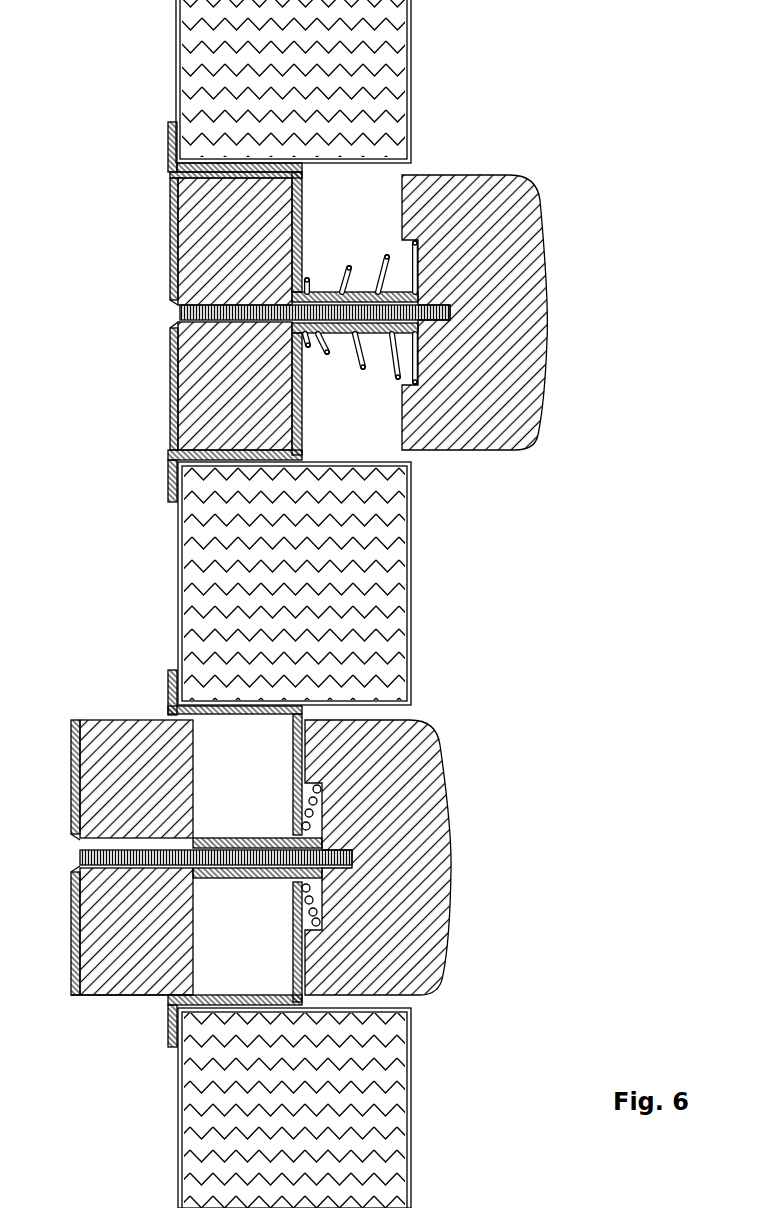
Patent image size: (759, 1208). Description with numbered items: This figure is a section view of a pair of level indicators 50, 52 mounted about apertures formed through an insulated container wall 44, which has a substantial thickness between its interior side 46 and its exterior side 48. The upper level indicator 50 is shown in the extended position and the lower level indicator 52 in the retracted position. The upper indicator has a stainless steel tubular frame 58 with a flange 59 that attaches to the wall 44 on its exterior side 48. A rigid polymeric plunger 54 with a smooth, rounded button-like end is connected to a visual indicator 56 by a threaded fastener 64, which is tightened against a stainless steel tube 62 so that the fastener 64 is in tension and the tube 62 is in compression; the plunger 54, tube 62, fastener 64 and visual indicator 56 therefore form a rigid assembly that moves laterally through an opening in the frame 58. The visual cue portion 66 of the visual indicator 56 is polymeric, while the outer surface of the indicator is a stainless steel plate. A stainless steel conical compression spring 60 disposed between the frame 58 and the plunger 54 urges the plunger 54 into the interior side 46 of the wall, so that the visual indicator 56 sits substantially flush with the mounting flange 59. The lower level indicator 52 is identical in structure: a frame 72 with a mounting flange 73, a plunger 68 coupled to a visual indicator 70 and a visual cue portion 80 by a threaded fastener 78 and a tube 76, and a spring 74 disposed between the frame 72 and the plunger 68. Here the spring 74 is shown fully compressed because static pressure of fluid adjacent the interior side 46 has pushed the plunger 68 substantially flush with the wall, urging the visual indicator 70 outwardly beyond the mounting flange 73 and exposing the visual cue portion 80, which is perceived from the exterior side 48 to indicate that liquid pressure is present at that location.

The insulated container wall 44 is at (411, 97).
The interior side 46 is at (637, 608).
The exterior side 48 is at (44, 600).
The upper level indicator 50 is at (382, 312).
The lower level indicator 52 is at (297, 858).
The plunger 54 is at (533, 403).
The visual indicator 56 is at (168, 385).
The tubular frame 58 is at (303, 218).
The mounting flange 59 is at (168, 153).
The conical compression spring 60 is at (366, 368).
The tube 62 is at (360, 290).
The threaded fastener 64 is at (178, 313).
The visual cue portion 66 is at (196, 242).
The plunger 68 is at (441, 948).
The visual indicator 70 is at (72, 945).
The frame 72 is at (293, 752).
The mounting flange 73 is at (168, 687).
The spring 74 is at (292, 912).
The tube 76 is at (256, 838).
The threaded fastener 78 is at (75, 860).
The visual cue portion 80 is at (125, 995).